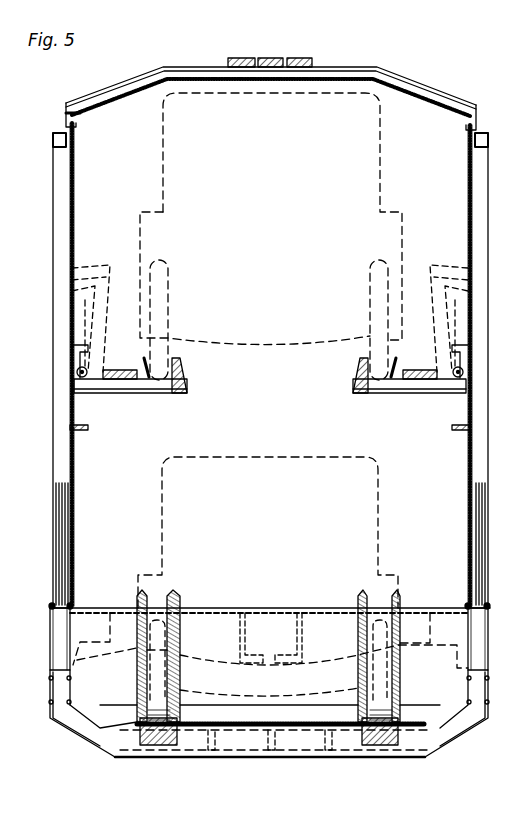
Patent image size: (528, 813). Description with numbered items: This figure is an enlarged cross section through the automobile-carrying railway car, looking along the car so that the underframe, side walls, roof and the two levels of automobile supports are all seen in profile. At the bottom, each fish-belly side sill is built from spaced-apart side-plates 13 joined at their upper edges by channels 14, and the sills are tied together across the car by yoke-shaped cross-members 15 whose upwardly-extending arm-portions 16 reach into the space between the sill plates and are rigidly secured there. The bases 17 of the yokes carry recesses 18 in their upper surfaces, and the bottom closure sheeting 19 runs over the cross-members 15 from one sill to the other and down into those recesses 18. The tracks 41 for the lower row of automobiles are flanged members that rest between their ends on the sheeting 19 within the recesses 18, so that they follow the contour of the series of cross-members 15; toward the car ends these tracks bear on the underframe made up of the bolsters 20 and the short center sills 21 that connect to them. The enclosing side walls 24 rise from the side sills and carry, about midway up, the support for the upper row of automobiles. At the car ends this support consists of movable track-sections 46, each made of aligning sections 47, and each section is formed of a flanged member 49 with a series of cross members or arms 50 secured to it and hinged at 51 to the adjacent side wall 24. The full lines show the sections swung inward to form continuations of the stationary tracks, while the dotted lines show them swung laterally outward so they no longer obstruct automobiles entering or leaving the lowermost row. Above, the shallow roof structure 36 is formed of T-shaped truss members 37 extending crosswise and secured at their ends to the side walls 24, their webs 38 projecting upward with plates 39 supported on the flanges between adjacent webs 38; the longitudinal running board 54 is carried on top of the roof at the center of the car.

The side-plate 13 is at (50, 645).
The channel 14 is at (55, 603).
The cross-member 15 is at (80, 730).
The arm-portion 16 is at (55, 696).
The base 17 is at (285, 758).
The recess 18 is at (137, 735).
The sheeting 19 is at (205, 725).
The bolster 20 is at (220, 628).
The short center sill 21 is at (283, 626).
The side wall 24 is at (72, 517).
The roof structure 36 is at (104, 88).
The truss member 37 is at (450, 108).
The web 38 is at (184, 72).
The plate 39 is at (78, 112).
The track 41 is at (180, 632).
The movable track-section 46 is at (86, 382).
The section 47 is at (140, 384).
The flanged member 49 is at (72, 300).
The cross member or arm 50 is at (106, 270).
The hinge 51 is at (77, 373).
The longitudinal running board 54 is at (275, 58).